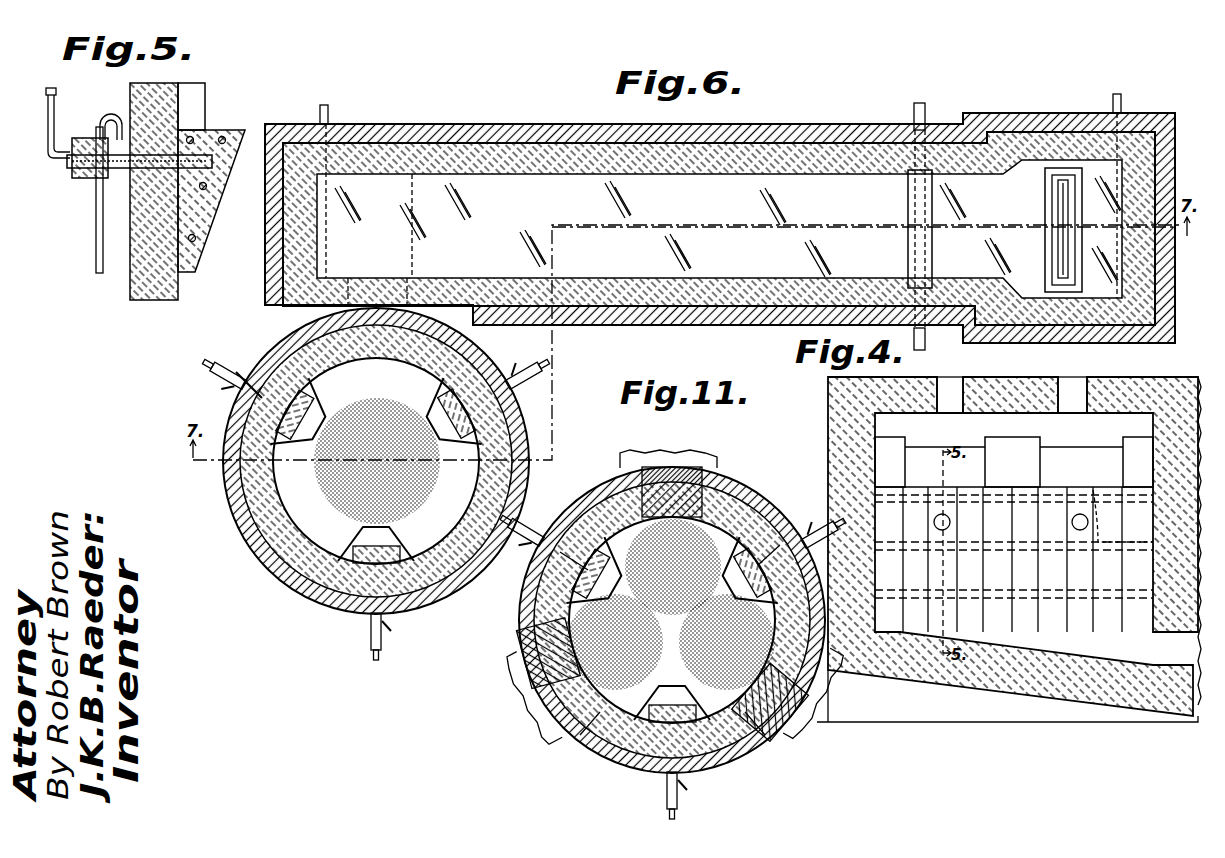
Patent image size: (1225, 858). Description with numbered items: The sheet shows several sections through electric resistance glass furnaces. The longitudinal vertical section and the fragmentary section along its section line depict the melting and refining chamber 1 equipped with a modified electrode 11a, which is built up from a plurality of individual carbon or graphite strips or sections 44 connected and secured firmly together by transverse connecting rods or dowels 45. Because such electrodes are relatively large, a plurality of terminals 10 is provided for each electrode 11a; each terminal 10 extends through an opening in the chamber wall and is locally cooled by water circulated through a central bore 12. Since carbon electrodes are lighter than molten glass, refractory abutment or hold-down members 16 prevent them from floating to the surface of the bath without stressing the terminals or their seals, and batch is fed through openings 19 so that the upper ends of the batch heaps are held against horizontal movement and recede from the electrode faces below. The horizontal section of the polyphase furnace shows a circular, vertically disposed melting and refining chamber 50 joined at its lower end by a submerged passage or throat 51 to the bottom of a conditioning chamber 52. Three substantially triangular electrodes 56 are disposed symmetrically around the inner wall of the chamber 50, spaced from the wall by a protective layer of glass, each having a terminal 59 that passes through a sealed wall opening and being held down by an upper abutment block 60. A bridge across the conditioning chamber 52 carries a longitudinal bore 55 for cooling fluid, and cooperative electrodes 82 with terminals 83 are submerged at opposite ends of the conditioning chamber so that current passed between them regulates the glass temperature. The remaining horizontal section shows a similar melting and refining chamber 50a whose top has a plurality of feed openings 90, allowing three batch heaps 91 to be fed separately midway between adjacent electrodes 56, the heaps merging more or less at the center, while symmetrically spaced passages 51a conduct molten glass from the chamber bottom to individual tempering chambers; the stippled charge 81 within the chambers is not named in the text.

In FIG. 5, the melting and refining chamber 1 is at (182, 288).
In FIG. 4, the melting and refining chamber 1 is at (878, 425).
In FIG. 5, the terminal 10 is at (118, 185).
In FIG. 4, the terminal 10 is at (1072, 520).
In FIG. 5, the electrode 11a is at (210, 224).
In FIG. 4, the electrode 11a is at (1076, 442).
In FIG. 5, the central bore 12 is at (173, 143).
In FIG. 4, the refractory abutment or hold-down member 16 is at (900, 448).
In FIG. 4, the opening 19 is at (960, 385).
In FIG. 5, the strip or section 44 is at (216, 172).
In FIG. 4, the strip or section 44 is at (1014, 559).
In FIG. 5, the transverse connecting rod or dowel 45 is at (243, 137).
In FIG. 4, the transverse connecting rod or dowel 45 is at (1092, 490).
In FIG. 6, the melting and refining chamber 50 is at (295, 530).
In FIG. 11, the melting and refining chamber 50a is at (524, 684).
In FIG. 6, the submerged passage or throat 51 is at (300, 322).
In FIG. 11, the passage 51a is at (650, 452).
In FIG. 6, the conditioning chamber 52 is at (560, 176).
In FIG. 6, the longitudinal bore 55 is at (906, 208).
In FIG. 6, the electrode 56 is at (428, 398).
In FIG. 11, the electrode 56 is at (672, 629).
In FIG. 6, the terminal 59 is at (205, 368).
In FIG. 11, the terminal 59 is at (540, 530).
In FIG. 6, the upper abutment or hold-down block 60 is at (265, 372).
In FIG. 6, the ball 81 is at (422, 480).
In FIG. 6, the cooperative electrode 82 is at (340, 218).
In FIG. 6, the terminal 83 is at (330, 112).
In FIG. 11, the feed opening 90 is at (608, 490).
In FIG. 11, the batch heap 91 is at (730, 498).